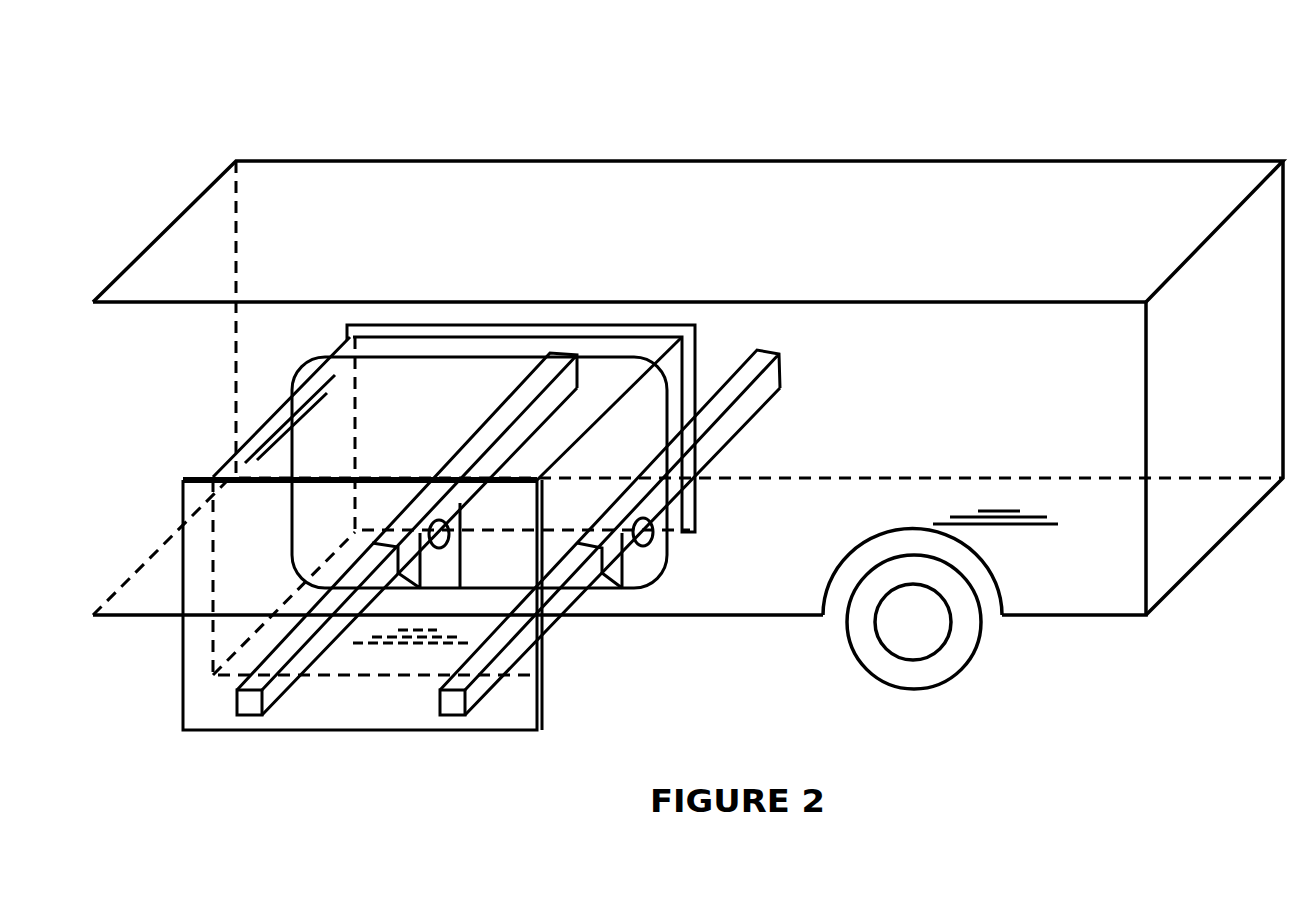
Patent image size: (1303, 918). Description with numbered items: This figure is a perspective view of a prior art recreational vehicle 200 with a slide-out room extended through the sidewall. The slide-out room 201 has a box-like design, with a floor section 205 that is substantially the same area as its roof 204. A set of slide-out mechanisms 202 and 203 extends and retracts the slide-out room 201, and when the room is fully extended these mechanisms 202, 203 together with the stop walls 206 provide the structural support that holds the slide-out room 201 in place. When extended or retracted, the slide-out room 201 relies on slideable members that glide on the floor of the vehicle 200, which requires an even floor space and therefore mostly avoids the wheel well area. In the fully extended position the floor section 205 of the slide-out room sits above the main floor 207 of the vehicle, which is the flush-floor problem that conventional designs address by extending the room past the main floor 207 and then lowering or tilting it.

The vehicle 200 is at (960, 143).
The slide-out room 201 is at (257, 597).
The slide-out mechanism 202 is at (765, 390).
The slide-out mechanism 203 is at (497, 425).
The roof 204 is at (268, 437).
The floor section 205 is at (448, 639).
The stop walls 206 is at (658, 330).
The main floor 207 is at (995, 505).